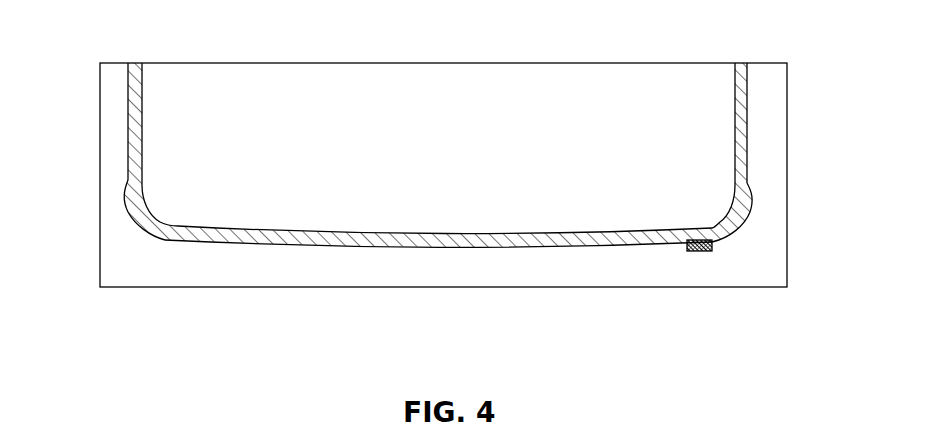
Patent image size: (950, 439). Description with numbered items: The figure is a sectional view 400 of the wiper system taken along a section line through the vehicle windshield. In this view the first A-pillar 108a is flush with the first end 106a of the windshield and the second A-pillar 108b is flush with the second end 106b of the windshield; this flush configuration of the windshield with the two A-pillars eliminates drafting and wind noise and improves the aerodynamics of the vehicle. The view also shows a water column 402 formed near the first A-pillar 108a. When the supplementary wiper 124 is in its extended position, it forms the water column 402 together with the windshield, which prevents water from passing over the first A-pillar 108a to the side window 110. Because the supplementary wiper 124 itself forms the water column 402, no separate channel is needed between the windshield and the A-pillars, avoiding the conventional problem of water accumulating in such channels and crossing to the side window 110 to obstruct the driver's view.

The sectional view 400 is at (116, 27).
The side window 110 is at (128, 120).
The first A-pillar 108a is at (751, 204).
The second A-pillar 108b is at (127, 206).
The first end of the windshield 106a is at (727, 240).
The second end of the windshield 106b is at (168, 240).
The supplementary wiper 124 is at (698, 252).
The water column 402 is at (676, 244).